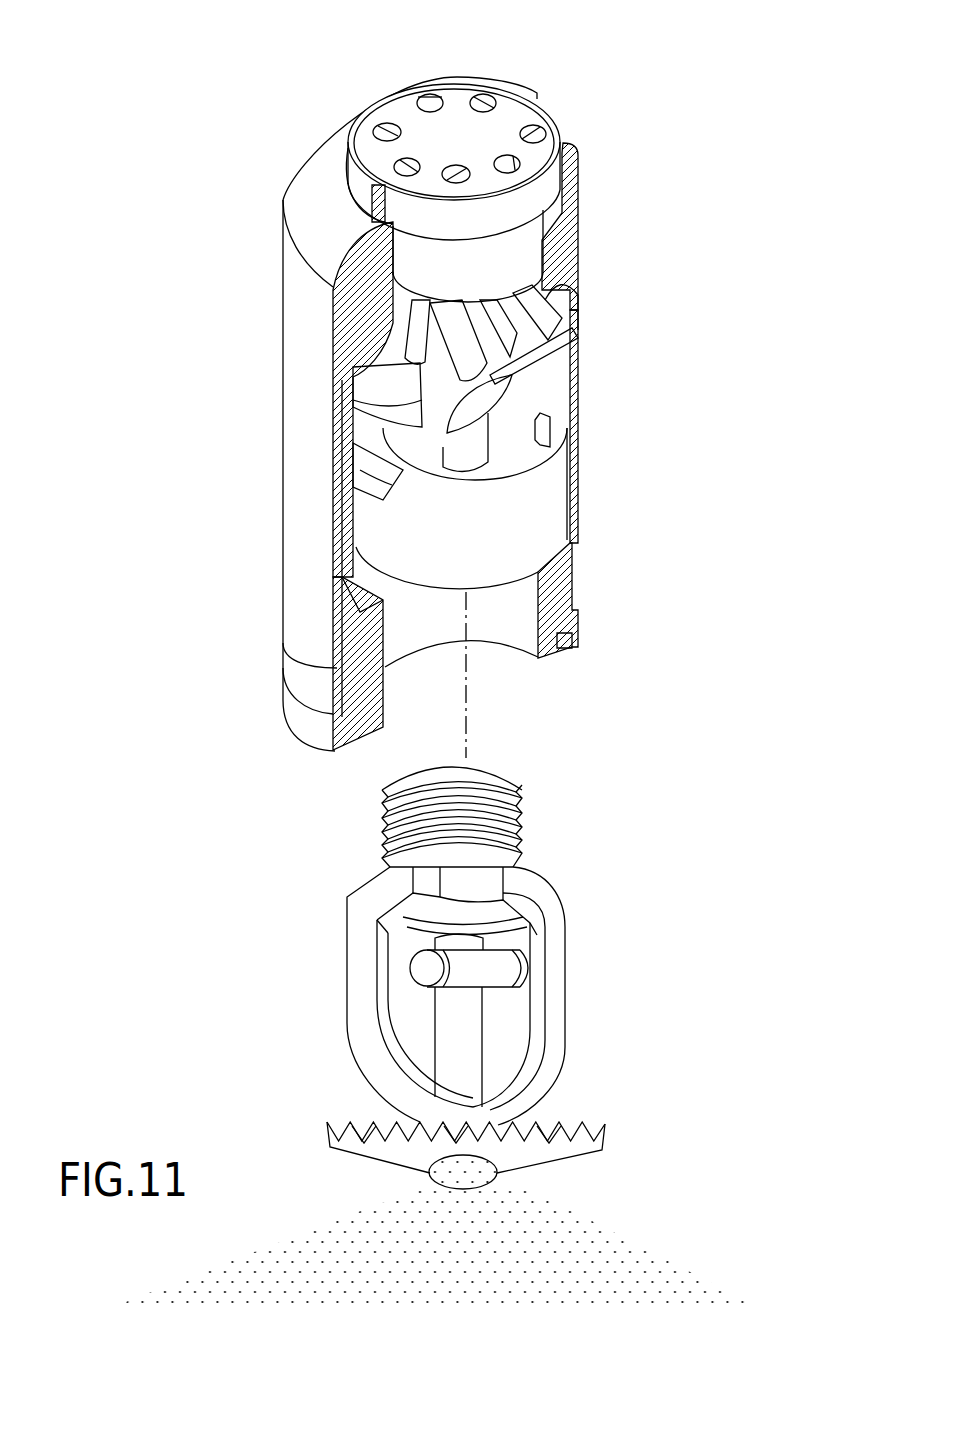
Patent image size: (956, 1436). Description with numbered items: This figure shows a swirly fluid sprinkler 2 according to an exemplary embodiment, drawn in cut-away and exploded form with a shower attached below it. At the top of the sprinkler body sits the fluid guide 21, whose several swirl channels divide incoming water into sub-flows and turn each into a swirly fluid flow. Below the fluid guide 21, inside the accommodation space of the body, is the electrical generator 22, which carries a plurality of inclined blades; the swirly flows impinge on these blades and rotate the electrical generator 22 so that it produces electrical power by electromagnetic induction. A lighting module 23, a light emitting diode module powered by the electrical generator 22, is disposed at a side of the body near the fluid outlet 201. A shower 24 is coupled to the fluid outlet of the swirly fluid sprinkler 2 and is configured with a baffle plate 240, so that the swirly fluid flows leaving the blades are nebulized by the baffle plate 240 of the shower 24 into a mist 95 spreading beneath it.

The swirly fluid sprinkler 2 is at (252, 125).
The fluid guide 21 is at (386, 97).
The electrical generator 22 is at (400, 458).
The lighting module 23 is at (285, 643).
The fluid outlet 201 is at (497, 665).
The shower 24 is at (320, 882).
The baffle plate 240 is at (393, 1157).
The mist 95 is at (595, 1248).